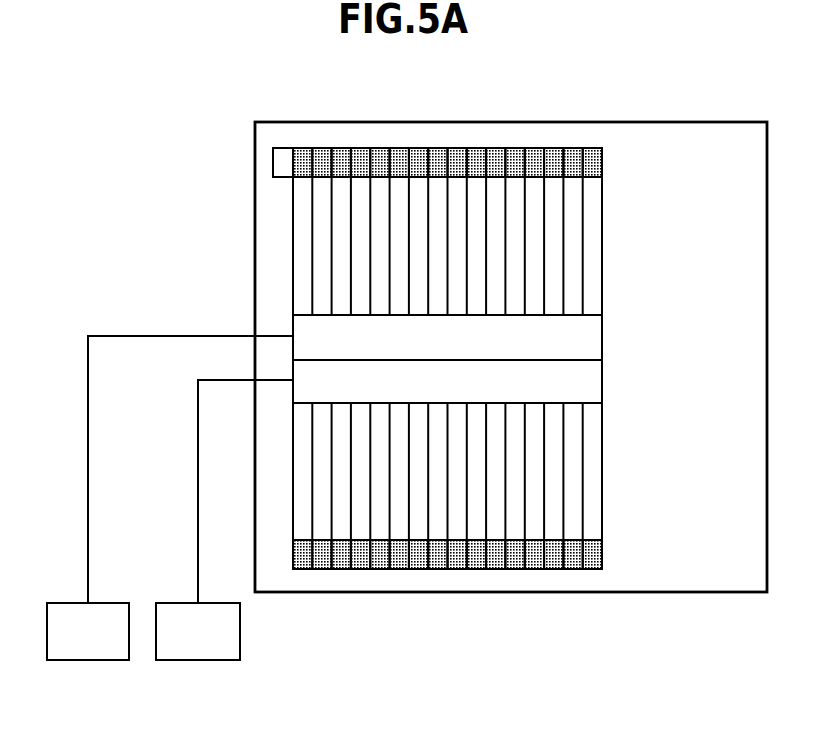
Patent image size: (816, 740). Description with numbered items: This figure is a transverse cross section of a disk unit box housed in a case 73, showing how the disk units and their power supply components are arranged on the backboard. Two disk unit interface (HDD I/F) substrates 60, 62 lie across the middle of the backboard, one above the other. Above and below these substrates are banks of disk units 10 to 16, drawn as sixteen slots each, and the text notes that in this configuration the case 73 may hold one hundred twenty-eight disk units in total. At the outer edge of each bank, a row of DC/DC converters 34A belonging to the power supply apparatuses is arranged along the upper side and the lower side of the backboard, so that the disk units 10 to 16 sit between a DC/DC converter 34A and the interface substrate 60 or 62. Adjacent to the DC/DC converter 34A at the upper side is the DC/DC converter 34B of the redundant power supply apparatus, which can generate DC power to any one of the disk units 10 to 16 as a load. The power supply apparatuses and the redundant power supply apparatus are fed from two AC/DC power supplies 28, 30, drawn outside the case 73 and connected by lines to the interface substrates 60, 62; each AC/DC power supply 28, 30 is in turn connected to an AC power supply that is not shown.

The case 73 is at (704, 122).
The disk unit 10 is at (518, 358).
The disk unit 16 is at (620, 497).
The DC/DC converter 34A is at (300, 148).
The DC/DC converter 34B is at (283, 148).
The disk unit interface substrate 60 is at (580, 339).
The disk unit interface substrate 62 is at (580, 381).
The AC/DC power supply 28 is at (88, 660).
The AC/DC power supply 30 is at (198, 660).